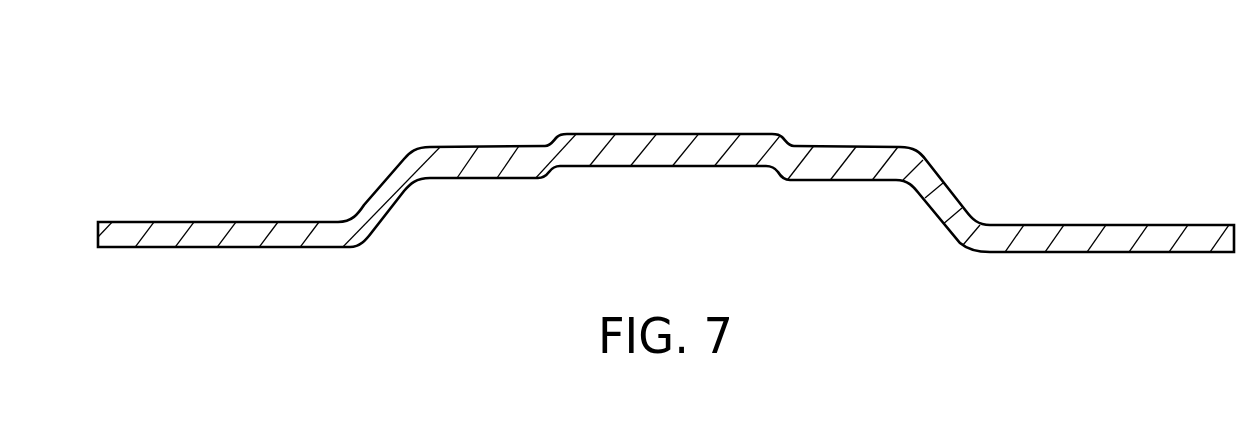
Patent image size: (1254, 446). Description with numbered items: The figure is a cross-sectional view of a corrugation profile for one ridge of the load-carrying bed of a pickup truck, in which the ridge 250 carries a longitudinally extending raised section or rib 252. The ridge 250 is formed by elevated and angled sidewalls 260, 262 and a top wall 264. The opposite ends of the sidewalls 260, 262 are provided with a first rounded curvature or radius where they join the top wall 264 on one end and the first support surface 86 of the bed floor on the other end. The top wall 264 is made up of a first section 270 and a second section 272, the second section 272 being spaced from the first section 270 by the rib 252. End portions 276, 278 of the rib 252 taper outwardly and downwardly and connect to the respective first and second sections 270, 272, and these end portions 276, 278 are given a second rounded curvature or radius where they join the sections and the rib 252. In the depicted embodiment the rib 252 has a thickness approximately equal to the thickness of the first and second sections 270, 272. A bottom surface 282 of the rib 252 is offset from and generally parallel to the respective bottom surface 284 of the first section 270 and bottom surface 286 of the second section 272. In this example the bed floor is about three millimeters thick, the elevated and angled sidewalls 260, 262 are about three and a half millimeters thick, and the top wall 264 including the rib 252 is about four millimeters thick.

The ridge 250 is at (866, 82).
The rib 252 is at (662, 120).
The first elevated and angled sidewall 260 is at (332, 176).
The second elevated and angled sidewall 262 is at (984, 171).
The top wall 264 is at (461, 133).
The first section 270 is at (512, 168).
The second section 272 is at (865, 170).
The first end portion 276 is at (550, 138).
The second end portion 278 is at (778, 143).
The bottom surface of the rib 282 is at (654, 167).
The bottom surface of the first section 284 is at (455, 180).
The bottom surface of the second section 286 is at (810, 181).
The first support surface 86 is at (1160, 225).